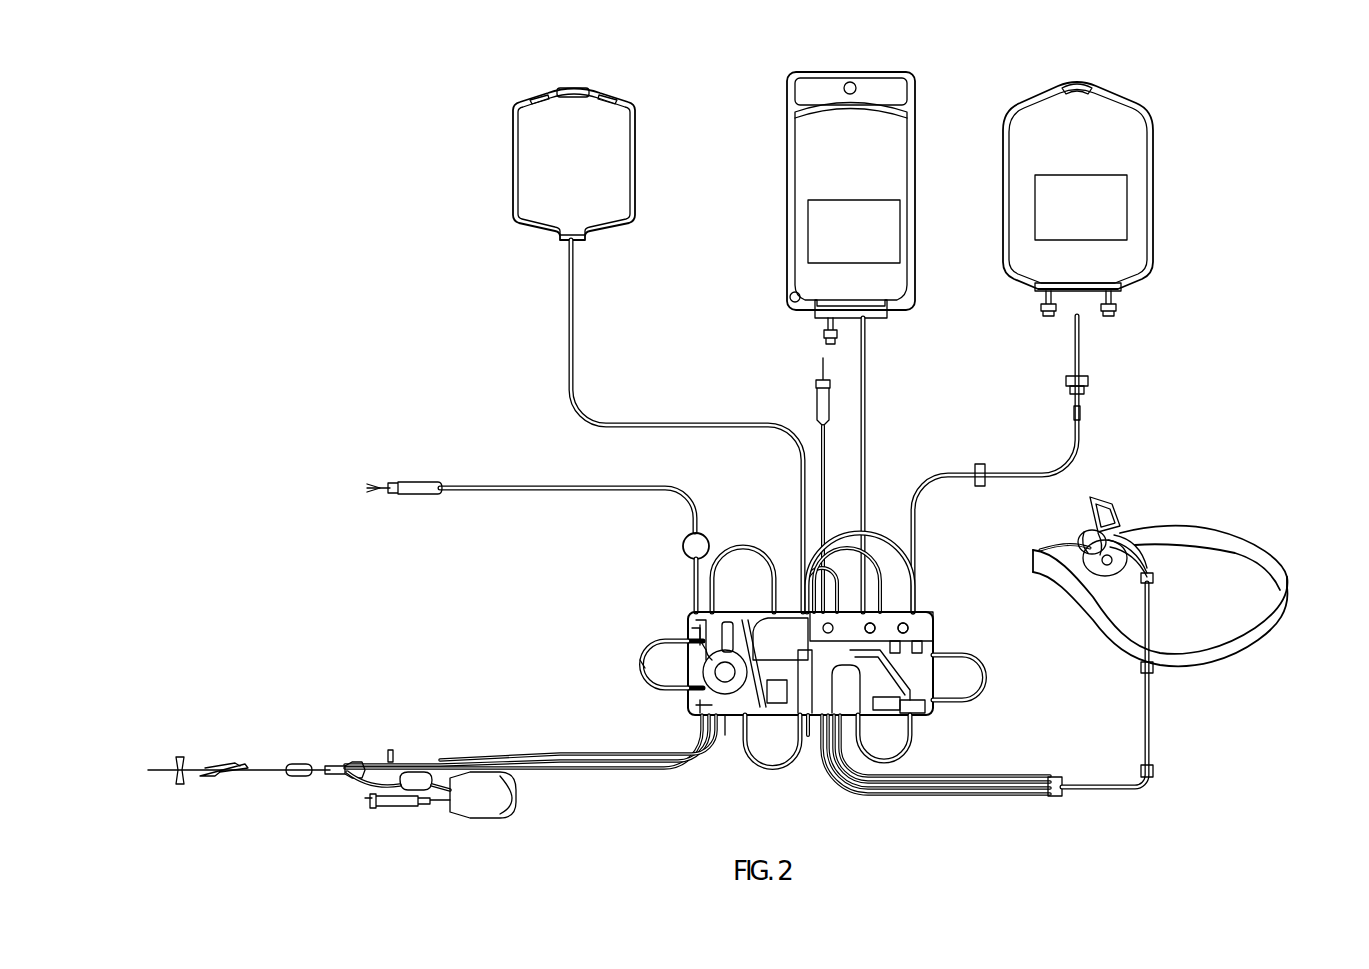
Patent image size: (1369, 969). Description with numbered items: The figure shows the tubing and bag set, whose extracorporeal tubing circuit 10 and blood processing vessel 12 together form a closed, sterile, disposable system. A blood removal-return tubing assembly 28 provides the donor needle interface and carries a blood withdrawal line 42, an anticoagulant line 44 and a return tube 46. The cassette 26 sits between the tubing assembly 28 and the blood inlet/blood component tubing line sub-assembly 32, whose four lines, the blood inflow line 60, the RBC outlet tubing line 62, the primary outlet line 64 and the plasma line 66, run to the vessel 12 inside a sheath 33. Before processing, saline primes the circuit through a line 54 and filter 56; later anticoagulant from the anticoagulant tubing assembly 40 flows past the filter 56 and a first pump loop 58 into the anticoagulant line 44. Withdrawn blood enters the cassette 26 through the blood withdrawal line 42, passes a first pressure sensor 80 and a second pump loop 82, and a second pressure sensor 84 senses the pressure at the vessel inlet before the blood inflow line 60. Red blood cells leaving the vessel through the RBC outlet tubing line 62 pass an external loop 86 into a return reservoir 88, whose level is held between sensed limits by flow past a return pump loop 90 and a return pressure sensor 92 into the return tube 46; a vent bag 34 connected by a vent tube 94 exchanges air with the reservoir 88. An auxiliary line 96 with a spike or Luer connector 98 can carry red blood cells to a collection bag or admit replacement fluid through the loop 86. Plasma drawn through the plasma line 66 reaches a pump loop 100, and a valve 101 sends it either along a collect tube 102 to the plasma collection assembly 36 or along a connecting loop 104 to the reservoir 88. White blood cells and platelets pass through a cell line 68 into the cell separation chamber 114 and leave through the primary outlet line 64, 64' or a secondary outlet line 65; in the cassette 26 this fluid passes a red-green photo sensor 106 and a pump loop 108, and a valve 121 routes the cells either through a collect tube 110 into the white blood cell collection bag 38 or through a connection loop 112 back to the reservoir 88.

The extracorporeal tubing circuit 10 is at (408, 368).
The blood processing vessel 12 is at (1237, 673).
The cassette 26 is at (625, 680).
The blood removal-return tubing assembly 28 is at (592, 792).
The blood inlet/blood component tubing line sub-assembly 32 is at (968, 797).
The sheath 33 is at (1150, 732).
The vent bag 34 is at (538, 100).
The plasma collection assembly 36 is at (787, 120).
The white blood cell collection bag 38 is at (1022, 104).
The anticoagulant tubing assembly 40 is at (503, 508).
The blood withdrawal line 42 is at (690, 763).
The anticoagulant line 44 is at (440, 752).
The return tube 46 is at (705, 758).
The line 54 is at (643, 485).
The filter 56 is at (683, 550).
The first pump loop 58 is at (665, 690).
The blood inflow line 60 is at (870, 795).
The RBC outlet tubing line 62 is at (840, 780).
The primary outlet line 64 is at (942, 748).
The primary outlet line 64' is at (1127, 586).
The secondary outlet line 65 is at (1108, 576).
The plasma line 66 is at (960, 780).
The cell line 68 is at (1086, 532).
The first pressure sensor 80 is at (688, 641).
The second pump loop 82 is at (768, 768).
The second pressure sensor 84 is at (808, 740).
The external loop 86 is at (828, 575).
The return reservoir 88 is at (803, 655).
The return pump loop 90 is at (735, 555).
The return pressure sensor 92 is at (696, 632).
The vent tube 94 is at (575, 336).
The auxiliary line 96 is at (820, 455).
The spike or Luer connector 98 is at (817, 385).
The pump loop 100 is at (905, 748).
The valve 101 is at (876, 626).
The collect tube 102 is at (866, 380).
The connecting loop or line 104 is at (870, 560).
The red-green photo sensor 106 is at (915, 712).
The pump loop or line 108 is at (970, 660).
The collect tube 110 is at (1077, 450).
The connection loop or line 112 is at (912, 566).
The cell separation chamber 114 is at (1103, 563).
The valve 121 is at (908, 628).